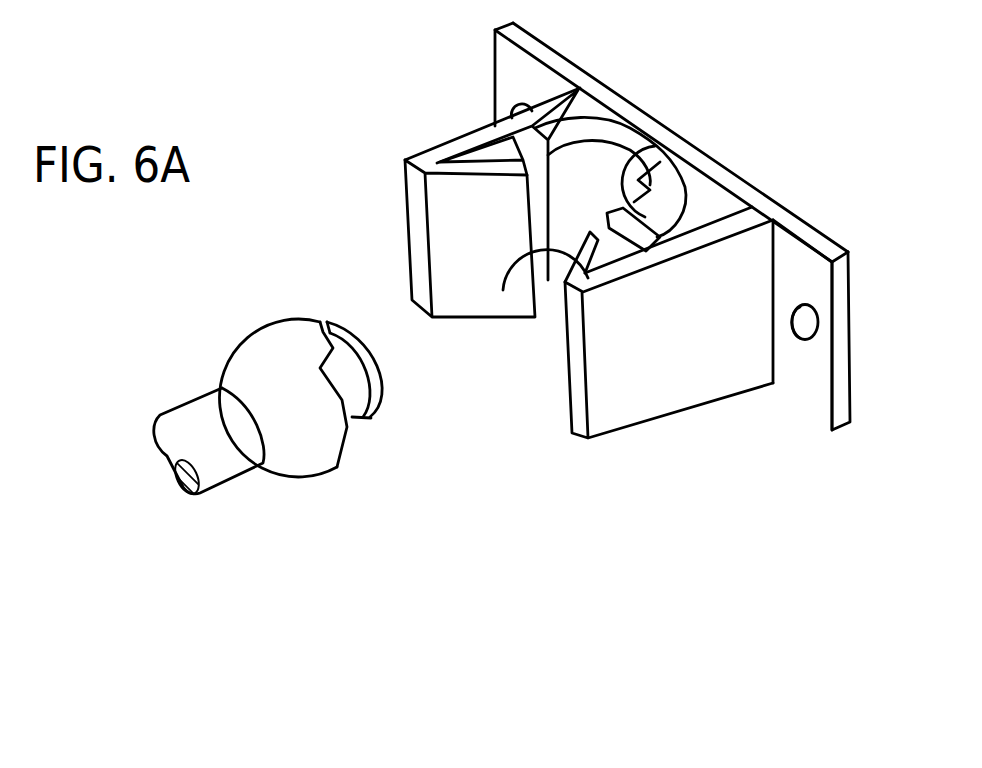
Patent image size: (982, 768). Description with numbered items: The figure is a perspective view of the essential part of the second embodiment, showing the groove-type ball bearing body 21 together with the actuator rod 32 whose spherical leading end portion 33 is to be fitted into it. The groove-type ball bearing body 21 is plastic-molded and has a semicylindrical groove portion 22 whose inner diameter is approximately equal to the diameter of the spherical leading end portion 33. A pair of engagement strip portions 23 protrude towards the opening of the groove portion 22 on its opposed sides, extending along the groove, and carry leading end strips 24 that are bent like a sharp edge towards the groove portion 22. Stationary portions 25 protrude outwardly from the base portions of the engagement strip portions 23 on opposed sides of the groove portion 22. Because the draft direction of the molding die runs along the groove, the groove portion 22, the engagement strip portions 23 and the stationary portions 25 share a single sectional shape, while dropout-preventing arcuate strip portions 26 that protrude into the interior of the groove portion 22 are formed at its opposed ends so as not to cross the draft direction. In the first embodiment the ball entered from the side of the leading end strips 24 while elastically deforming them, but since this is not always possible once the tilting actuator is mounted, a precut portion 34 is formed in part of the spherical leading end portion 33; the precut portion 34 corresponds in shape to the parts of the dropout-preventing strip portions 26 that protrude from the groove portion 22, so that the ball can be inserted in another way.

The groove-type ball bearing body 21 is at (737, 162).
The groove portion 22 is at (593, 173).
The engagement strip portions 23 is at (660, 397).
The leading end strips 24 is at (462, 260).
The stationary portions 25 is at (808, 390).
The dropout-preventing arcuate strip portions 26 is at (643, 142).
The actuator rod 32 is at (229, 463).
The spherical leading end portion 33 is at (252, 368).
The precut portion 34 is at (352, 418).